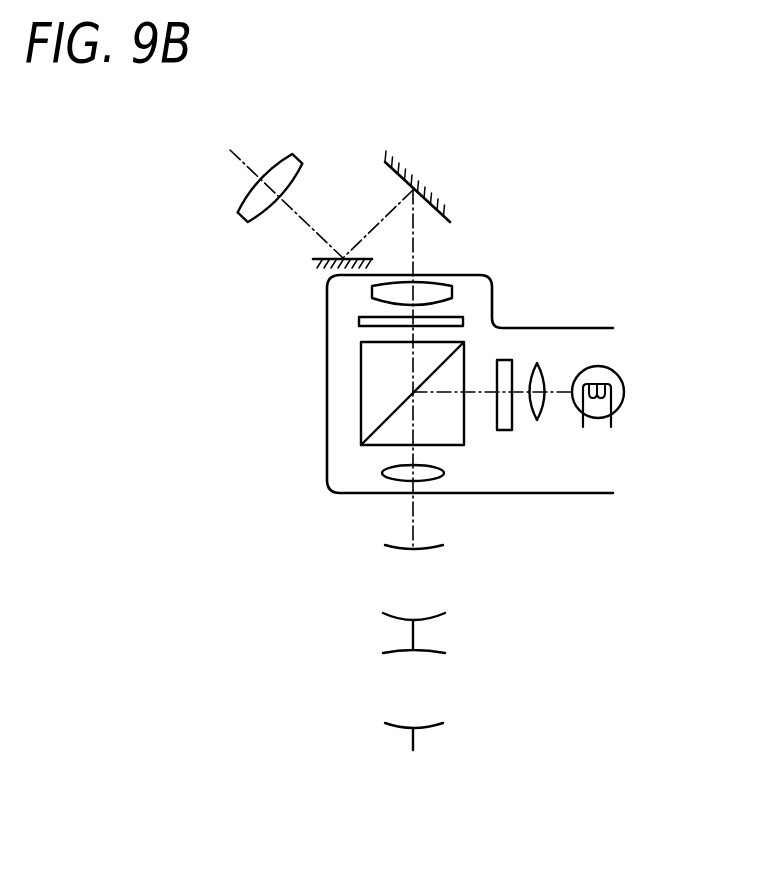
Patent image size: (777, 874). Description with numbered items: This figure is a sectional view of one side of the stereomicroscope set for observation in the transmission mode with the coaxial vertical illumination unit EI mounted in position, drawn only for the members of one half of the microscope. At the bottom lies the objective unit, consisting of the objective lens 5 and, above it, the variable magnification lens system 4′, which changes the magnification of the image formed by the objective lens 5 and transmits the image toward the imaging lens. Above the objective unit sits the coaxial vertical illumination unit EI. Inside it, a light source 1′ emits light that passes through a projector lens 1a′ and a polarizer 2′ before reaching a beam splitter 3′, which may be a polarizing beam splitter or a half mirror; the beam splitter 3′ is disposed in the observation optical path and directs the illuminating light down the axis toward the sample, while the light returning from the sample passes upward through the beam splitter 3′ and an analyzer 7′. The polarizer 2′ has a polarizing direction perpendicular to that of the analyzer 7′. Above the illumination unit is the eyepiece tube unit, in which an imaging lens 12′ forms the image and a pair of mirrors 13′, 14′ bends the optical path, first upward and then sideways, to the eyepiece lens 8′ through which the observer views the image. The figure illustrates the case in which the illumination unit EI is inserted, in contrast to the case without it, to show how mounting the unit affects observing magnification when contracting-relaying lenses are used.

The eyepiece lens 8′ is at (273, 168).
The mirror 13′ is at (405, 180).
The mirror 14′ is at (315, 259).
The imaging lens 12′ is at (447, 284).
The analyzer 7′ is at (463, 322).
The beam splitter 3′ is at (452, 356).
The polarizer 2′ is at (505, 432).
The projector lens 1a′ is at (541, 420).
The light source 1′ is at (625, 380).
The coaxial vertical illumination unit EI is at (503, 495).
The variable magnification lens system 4′ is at (427, 580).
The objective lens 5 is at (432, 688).